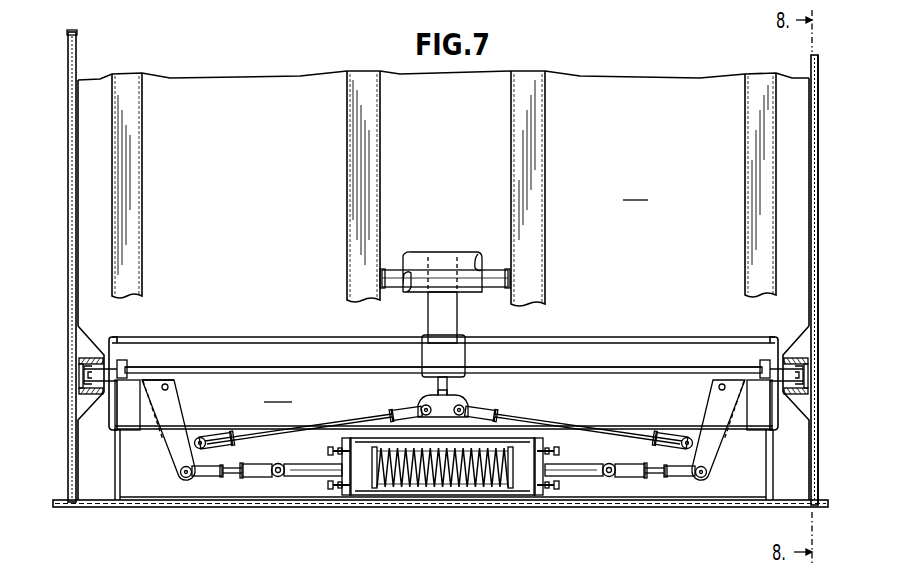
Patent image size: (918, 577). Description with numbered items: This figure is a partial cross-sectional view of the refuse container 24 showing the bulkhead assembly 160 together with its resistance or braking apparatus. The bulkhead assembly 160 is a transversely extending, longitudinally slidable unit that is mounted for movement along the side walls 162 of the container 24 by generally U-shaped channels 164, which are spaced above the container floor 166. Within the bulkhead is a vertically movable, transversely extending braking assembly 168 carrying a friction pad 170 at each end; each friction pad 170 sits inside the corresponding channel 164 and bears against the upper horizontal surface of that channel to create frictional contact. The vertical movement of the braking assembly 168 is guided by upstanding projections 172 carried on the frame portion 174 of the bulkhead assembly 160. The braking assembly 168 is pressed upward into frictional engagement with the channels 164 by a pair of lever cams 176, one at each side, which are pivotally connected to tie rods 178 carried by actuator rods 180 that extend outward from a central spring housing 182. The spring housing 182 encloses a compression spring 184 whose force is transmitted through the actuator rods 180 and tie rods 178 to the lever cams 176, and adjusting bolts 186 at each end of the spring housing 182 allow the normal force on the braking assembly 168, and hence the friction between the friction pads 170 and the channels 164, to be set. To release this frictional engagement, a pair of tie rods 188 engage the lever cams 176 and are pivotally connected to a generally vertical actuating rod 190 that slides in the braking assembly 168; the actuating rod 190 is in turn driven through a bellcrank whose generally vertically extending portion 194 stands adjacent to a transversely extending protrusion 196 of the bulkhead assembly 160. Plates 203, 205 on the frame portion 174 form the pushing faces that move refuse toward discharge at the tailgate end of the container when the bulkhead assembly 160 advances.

The container 24 is at (820, 155).
The bulkhead assembly 160 is at (272, 85).
The side walls 162 is at (68, 259).
The U-shaped channels 164 is at (84, 356).
The container floor 166 is at (567, 508).
The braking assembly 168 is at (289, 342).
The friction pad 170 is at (83, 372).
The vertically upstanding projections 172 is at (128, 366).
The frame portion 174 is at (444, 440).
The lever cams 176 is at (168, 448).
The tie rods 178 is at (259, 451).
The actuator rods 180 is at (303, 477).
The spring housing 182 is at (451, 495).
The compression spring 184 is at (498, 489).
The adjusting bolts 186 is at (328, 451).
The tie rods 188 is at (370, 413).
The actuating rod 190 is at (447, 395).
The vertically extending portion 194 is at (461, 331).
The protrusion 196 is at (484, 233).
The plate 203 is at (635, 189).
The plate 205 is at (689, 498).